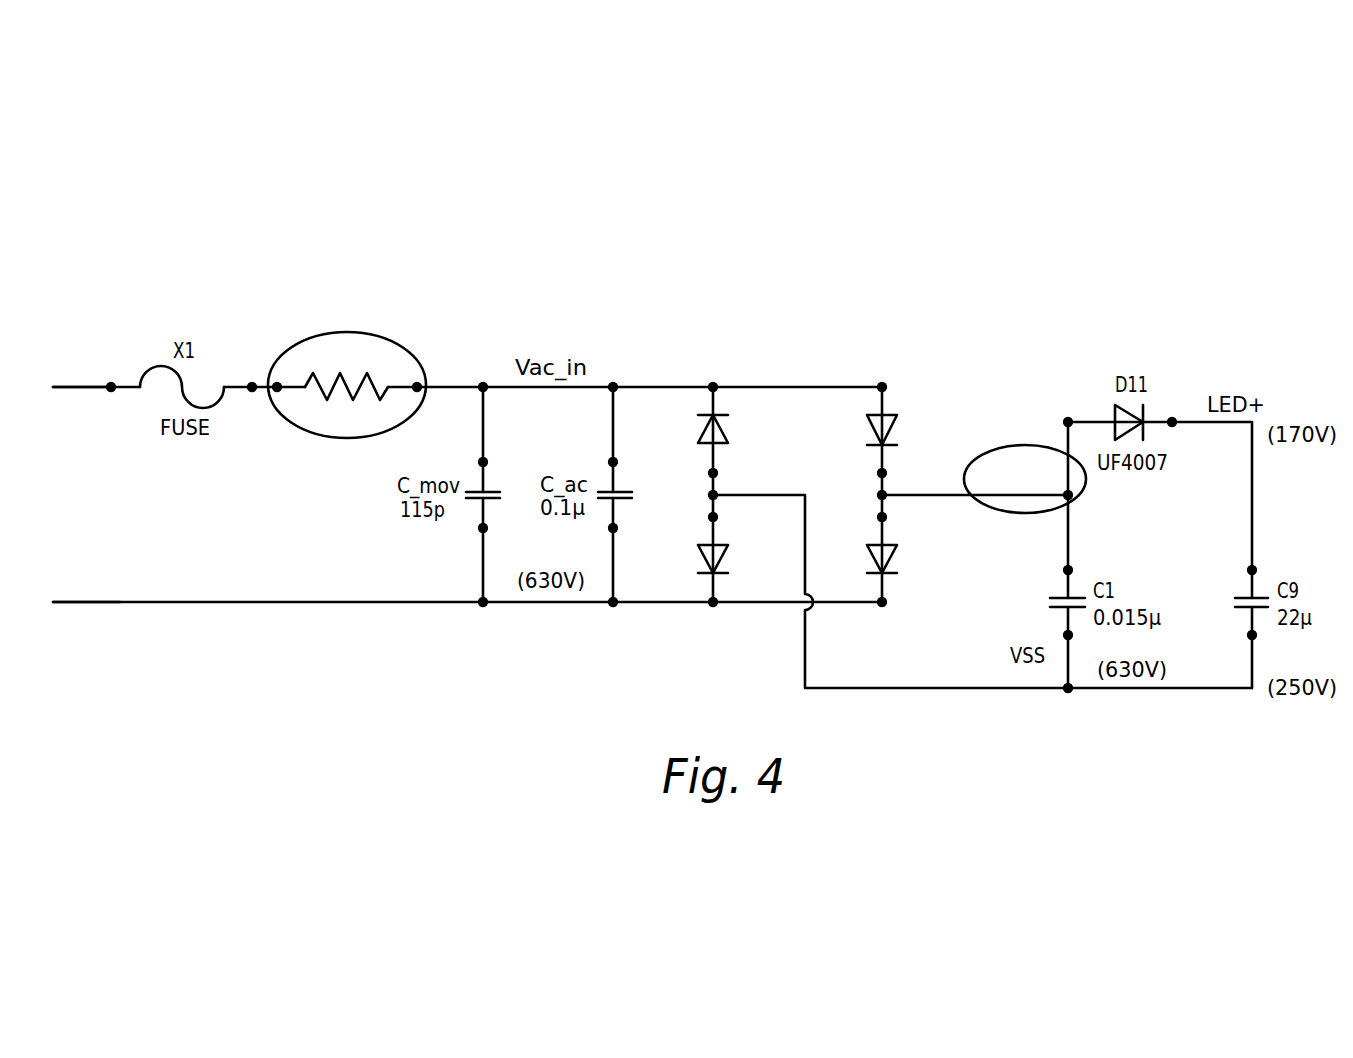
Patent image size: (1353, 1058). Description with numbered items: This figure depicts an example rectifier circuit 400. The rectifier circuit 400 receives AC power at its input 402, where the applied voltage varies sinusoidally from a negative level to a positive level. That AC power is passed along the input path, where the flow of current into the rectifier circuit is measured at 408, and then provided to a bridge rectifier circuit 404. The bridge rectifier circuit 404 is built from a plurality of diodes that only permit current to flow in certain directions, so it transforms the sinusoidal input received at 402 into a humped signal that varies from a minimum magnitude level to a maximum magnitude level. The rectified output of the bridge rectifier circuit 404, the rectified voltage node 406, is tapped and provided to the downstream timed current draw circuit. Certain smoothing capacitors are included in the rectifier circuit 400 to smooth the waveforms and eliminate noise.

The rectifier circuit 400 is at (263, 214).
The AC power input 402 is at (78, 362).
The bridge rectifier circuit 404 is at (820, 387).
The V_rect output 406 is at (1020, 445).
The rectifier circuit current input point 408 is at (365, 333).